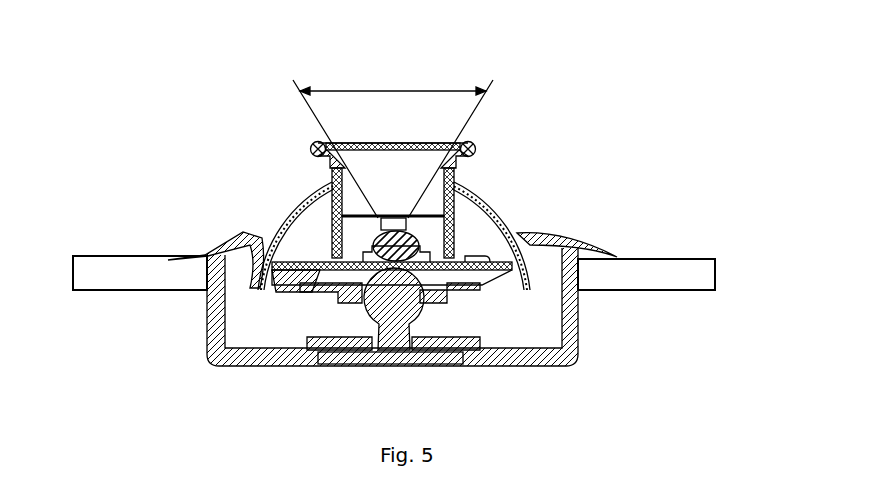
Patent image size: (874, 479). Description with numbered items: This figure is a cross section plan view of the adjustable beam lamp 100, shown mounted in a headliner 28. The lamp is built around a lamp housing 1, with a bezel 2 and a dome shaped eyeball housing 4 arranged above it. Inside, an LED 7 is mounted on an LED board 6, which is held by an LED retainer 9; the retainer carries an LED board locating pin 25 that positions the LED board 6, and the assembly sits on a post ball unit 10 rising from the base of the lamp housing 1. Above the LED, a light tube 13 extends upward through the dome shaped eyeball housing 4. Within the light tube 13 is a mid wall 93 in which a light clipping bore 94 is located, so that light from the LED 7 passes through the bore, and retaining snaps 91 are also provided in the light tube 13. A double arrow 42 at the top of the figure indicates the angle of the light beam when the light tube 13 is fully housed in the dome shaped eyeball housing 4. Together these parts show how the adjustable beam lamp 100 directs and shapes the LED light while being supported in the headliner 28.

The lamp housing 1 is at (570, 354).
The bezel 2 is at (578, 232).
The dome shaped eyeball housing 4 is at (303, 200).
The LED board 6 is at (303, 262).
The LED 7 is at (418, 226).
The LED retainer 9 is at (283, 287).
The post ball unit 10 is at (335, 365).
The light tube 13 is at (466, 143).
The LED board locating pin 25 is at (272, 260).
The headliner 28 is at (90, 272).
The double arrow 42 is at (390, 90).
The retaining snaps 91 is at (462, 238).
The mid wall 93 is at (334, 188).
The light clipping bore 94 is at (398, 232).
The adjustable beam lamp 100 is at (627, 140).